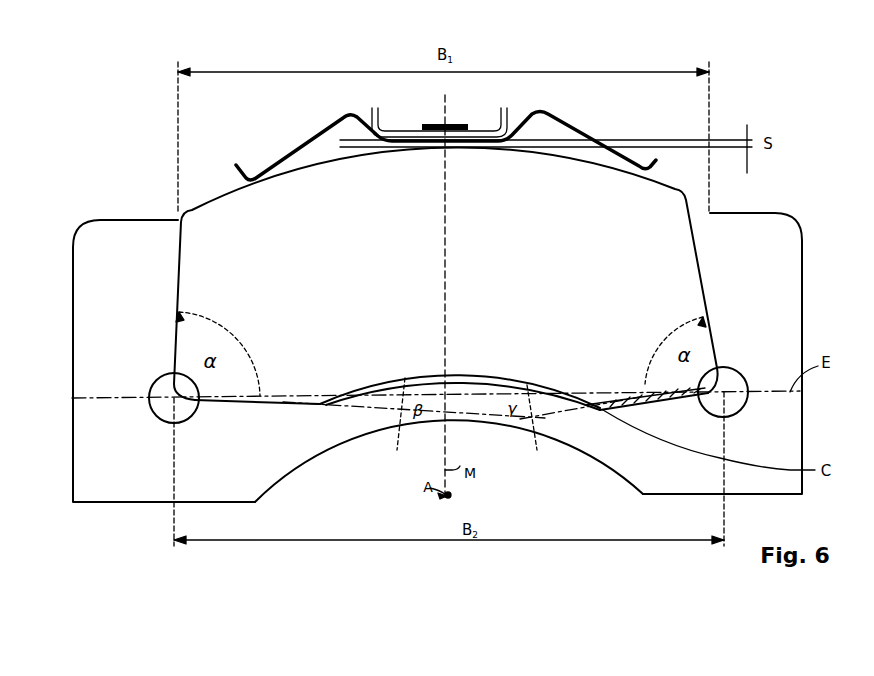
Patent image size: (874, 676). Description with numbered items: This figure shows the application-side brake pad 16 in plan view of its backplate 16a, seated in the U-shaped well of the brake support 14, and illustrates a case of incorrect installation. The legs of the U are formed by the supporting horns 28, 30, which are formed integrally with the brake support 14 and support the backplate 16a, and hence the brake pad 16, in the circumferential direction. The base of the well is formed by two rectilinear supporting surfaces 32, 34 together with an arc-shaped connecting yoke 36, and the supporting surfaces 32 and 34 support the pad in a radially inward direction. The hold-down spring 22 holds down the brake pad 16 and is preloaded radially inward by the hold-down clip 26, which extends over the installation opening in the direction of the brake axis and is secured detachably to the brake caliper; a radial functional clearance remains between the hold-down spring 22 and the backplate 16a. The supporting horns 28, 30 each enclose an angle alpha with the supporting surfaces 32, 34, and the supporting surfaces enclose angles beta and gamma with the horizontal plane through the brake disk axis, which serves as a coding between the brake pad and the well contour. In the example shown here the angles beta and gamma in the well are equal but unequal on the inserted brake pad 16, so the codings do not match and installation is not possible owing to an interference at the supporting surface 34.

The brake support 14 is at (88, 475).
The application-side brake pad 16 is at (572, 241).
The backplate 16a is at (578, 283).
The hold-down spring 22 is at (560, 115).
The hold-down clip 26 is at (478, 122).
The supporting horn 28 is at (100, 218).
The supporting horn 30 is at (795, 227).
The supporting surface 32 is at (277, 405).
The supporting surface 34 is at (614, 415).
The connecting yoke 36 is at (370, 435).